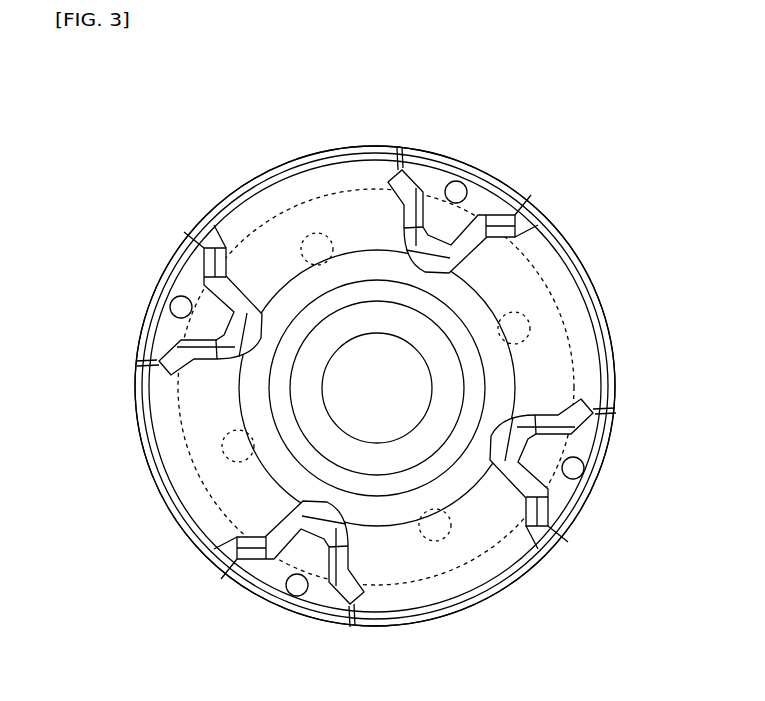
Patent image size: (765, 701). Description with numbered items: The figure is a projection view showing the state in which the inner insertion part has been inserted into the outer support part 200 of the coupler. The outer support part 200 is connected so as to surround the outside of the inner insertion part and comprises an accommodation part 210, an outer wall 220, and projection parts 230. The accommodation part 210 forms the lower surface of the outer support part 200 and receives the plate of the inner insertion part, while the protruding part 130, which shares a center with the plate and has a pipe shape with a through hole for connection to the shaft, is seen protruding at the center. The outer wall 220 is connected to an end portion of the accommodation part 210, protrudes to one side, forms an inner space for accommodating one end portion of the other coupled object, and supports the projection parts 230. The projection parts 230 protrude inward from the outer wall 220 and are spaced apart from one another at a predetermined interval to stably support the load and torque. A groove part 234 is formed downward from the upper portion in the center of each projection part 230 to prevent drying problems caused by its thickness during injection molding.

The outer support part 200 is at (104, 85).
The accommodation part 210 is at (252, 221).
The outer wall 220 is at (178, 257).
The projection part 230 is at (205, 317).
The groove part 234 is at (171, 302).
The protruding part 130 is at (362, 323).